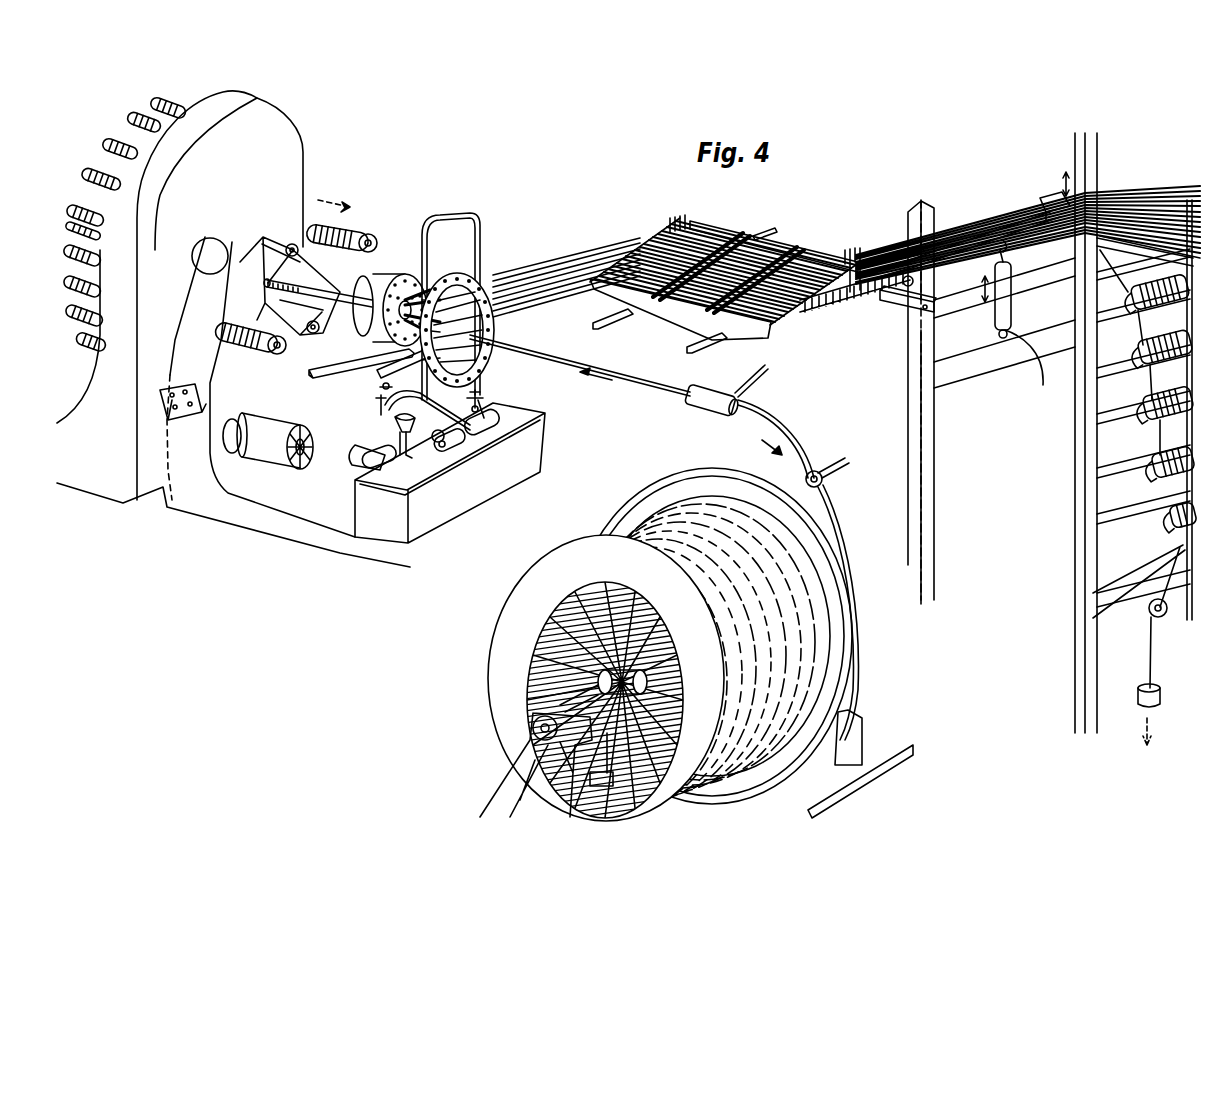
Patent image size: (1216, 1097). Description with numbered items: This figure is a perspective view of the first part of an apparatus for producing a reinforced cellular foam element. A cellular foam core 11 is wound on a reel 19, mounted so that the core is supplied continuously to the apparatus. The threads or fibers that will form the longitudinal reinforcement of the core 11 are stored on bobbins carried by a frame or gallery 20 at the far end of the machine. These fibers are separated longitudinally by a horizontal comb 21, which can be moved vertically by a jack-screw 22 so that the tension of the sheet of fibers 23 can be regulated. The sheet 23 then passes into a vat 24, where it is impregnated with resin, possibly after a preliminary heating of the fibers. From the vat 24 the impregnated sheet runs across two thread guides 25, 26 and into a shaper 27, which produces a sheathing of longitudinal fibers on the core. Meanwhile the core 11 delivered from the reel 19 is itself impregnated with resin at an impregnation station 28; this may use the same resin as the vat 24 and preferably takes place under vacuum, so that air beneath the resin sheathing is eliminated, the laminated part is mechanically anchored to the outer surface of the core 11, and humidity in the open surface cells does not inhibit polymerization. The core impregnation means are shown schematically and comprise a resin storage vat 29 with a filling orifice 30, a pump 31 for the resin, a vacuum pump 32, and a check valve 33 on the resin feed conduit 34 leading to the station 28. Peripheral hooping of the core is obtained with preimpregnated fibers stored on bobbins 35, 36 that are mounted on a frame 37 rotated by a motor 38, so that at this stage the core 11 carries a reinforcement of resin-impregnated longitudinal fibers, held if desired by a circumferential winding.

The cellular foam core 11 is at (830, 503).
The reel 19 is at (841, 660).
The frame or gallery 20 is at (1180, 192).
The horizontal comb 21 is at (1040, 203).
The jack-screw 22 is at (1012, 283).
The sheet of fibers 23 is at (857, 290).
The vat 24 is at (793, 257).
The thread guide 25 is at (483, 283).
The thread guide 26 is at (406, 278).
The shaper 27 is at (372, 279).
The impregnation station 28 is at (424, 306).
The resin storage vat 29 is at (367, 517).
The filling orifice 30 is at (403, 428).
The pump 31 is at (357, 457).
The vacuum pump 32 is at (441, 453).
The check valve 33 is at (480, 400).
The resin feed conduit 34 is at (478, 240).
The bobbin 35 is at (255, 350).
The bobbin 36 is at (350, 233).
The frame 37 is at (250, 301).
The motor 38 is at (272, 458).